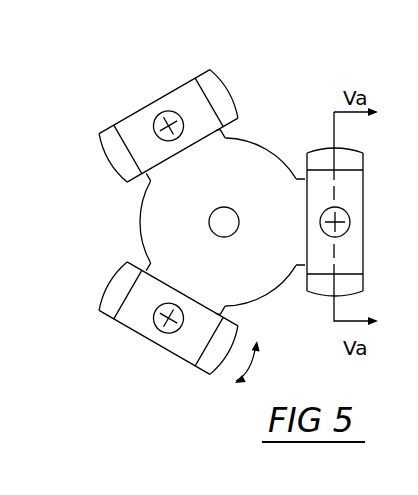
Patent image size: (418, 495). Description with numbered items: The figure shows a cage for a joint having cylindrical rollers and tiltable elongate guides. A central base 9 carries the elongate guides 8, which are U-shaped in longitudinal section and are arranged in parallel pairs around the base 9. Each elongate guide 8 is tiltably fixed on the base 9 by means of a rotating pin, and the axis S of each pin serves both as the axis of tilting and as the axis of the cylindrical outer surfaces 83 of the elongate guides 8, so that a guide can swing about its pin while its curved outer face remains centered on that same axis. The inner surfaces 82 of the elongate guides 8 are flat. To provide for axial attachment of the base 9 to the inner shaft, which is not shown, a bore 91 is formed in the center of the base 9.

The elongate guides 8 is at (127, 313).
The base 9 is at (262, 157).
The bore 91 is at (230, 207).
The inner surfaces 82 is at (208, 92).
The cylindrical outer surfaces 83 is at (225, 82).
The axes of the pins S is at (347, 215).